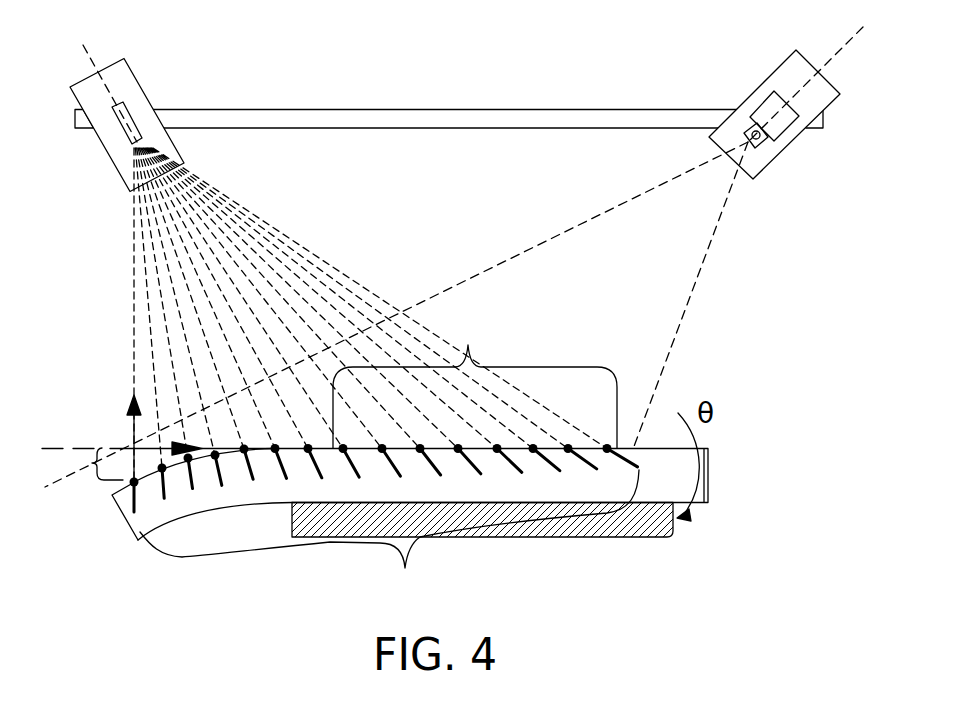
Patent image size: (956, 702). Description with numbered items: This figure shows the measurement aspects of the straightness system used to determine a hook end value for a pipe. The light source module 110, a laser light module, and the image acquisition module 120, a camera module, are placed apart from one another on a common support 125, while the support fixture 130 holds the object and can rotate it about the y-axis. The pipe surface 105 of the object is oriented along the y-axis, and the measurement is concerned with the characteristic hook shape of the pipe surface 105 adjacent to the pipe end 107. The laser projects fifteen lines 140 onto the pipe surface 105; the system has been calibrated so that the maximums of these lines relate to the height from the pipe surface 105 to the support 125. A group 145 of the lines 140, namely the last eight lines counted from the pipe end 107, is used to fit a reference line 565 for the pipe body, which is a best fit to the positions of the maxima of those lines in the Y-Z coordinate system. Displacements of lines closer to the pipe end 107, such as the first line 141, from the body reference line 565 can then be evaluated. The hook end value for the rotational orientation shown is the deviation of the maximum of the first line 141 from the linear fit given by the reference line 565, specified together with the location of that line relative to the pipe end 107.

The pipe surface 105 is at (662, 462).
The pipe end 107 is at (128, 498).
The light source module 110 is at (222, 102).
The image acquisition module 120 is at (725, 105).
The support 125 is at (457, 115).
The support fixture 130 is at (633, 537).
The lines 140 is at (389, 538).
The first line 141 is at (112, 495).
The group of lines 145 is at (492, 335).
The reference line 565 is at (83, 447).